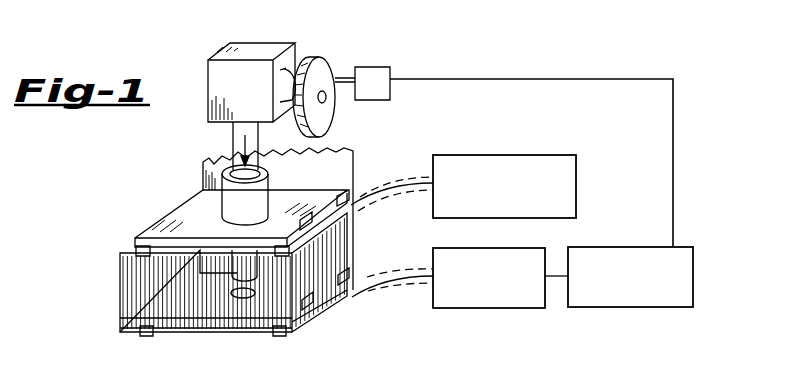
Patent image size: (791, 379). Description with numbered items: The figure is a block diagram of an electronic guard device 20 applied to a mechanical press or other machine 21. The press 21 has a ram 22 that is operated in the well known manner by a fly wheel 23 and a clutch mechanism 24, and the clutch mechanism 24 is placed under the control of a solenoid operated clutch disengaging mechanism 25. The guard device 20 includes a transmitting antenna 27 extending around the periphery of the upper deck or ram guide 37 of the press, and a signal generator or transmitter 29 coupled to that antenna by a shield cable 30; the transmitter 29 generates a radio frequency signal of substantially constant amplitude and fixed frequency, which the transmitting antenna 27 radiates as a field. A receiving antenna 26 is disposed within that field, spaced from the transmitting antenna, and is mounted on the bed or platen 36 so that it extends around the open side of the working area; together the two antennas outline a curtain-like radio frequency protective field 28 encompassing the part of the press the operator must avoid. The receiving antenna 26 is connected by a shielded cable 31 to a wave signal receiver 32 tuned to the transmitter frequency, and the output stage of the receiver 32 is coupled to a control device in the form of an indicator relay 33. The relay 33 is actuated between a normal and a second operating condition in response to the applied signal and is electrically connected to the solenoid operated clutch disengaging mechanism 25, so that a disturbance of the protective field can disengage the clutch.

The electronic guard device 20 is at (534, 73).
The mechanical press 21 is at (216, 56).
The ram 22 is at (236, 137).
The fly wheel 23 is at (324, 70).
The clutch mechanism 24 is at (299, 70).
The solenoid operated clutch disengaging mechanism 25 is at (372, 70).
The receiving antenna 26 is at (120, 333).
The transmitting antenna 27 is at (137, 253).
The radio frequency protective field 28 is at (197, 302).
The transmitter 29 is at (509, 168).
The shield cable 30 is at (397, 183).
The shielded cable 31 is at (388, 284).
The wave signal receiver 32 is at (480, 302).
The indicator relay 33 is at (632, 300).
The bed or platen 36 is at (243, 310).
The upper deck or ram guide 37 is at (192, 208).